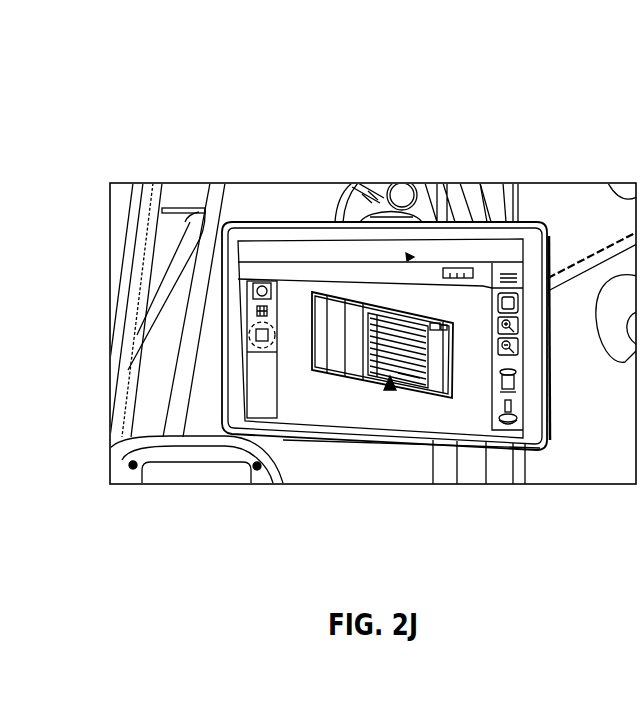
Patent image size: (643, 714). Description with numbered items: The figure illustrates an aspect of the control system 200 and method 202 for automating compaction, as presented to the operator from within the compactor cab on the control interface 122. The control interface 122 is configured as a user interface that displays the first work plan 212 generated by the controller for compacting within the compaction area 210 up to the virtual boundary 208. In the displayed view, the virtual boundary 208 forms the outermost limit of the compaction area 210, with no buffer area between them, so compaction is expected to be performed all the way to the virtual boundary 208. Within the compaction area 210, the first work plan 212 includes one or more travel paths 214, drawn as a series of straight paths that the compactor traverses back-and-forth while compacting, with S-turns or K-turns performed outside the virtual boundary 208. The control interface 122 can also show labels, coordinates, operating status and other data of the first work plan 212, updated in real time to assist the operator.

The control system 200 is at (217, 68).
The method 202 is at (373, 333).
The control interface 122 is at (282, 222).
The virtual boundary 208 is at (418, 315).
The compaction area 210 is at (360, 318).
The first work plan 212 is at (390, 390).
The travel paths 214 is at (407, 372).